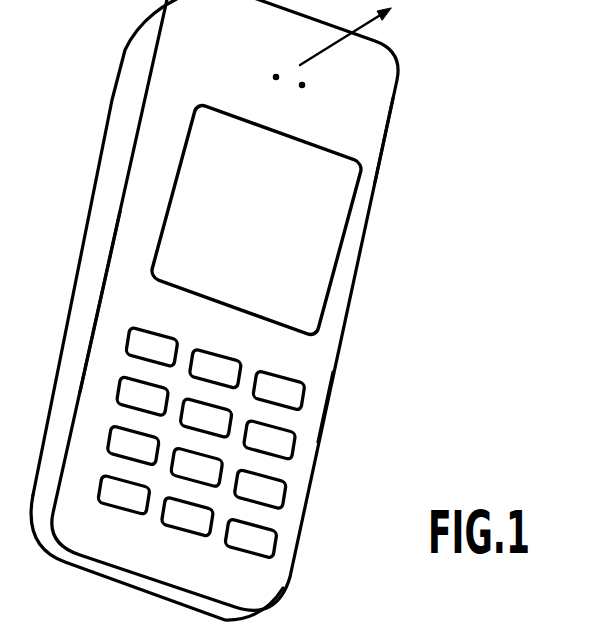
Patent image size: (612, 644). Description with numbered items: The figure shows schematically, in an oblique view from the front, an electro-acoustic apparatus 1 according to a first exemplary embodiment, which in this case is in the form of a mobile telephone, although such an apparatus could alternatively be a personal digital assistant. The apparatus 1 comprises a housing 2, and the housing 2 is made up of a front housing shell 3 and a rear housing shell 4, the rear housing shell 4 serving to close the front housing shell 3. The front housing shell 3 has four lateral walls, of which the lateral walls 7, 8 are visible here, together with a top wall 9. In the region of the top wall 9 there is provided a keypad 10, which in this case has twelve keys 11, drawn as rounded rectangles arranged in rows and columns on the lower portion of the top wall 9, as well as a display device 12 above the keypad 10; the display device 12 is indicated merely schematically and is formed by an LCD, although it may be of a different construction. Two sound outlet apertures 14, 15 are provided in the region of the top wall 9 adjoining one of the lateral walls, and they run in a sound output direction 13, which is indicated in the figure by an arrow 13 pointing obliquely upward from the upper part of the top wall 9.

The electro-acoustic apparatus 1 is at (299, 310).
The housing 2 is at (372, 307).
The front housing shell 3 is at (326, 405).
The rear housing shell 4 is at (106, 142).
The lateral wall 7 is at (127, 577).
The lateral wall 8 is at (97, 230).
The top wall 9 is at (368, 148).
The keypad 10 is at (253, 562).
The keys 11 is at (173, 466).
The display device 12 is at (331, 237).
The sound output direction 13 is at (365, 30).
The sound outlet aperture 14 is at (271, 82).
The sound outlet aperture 15 is at (304, 88).